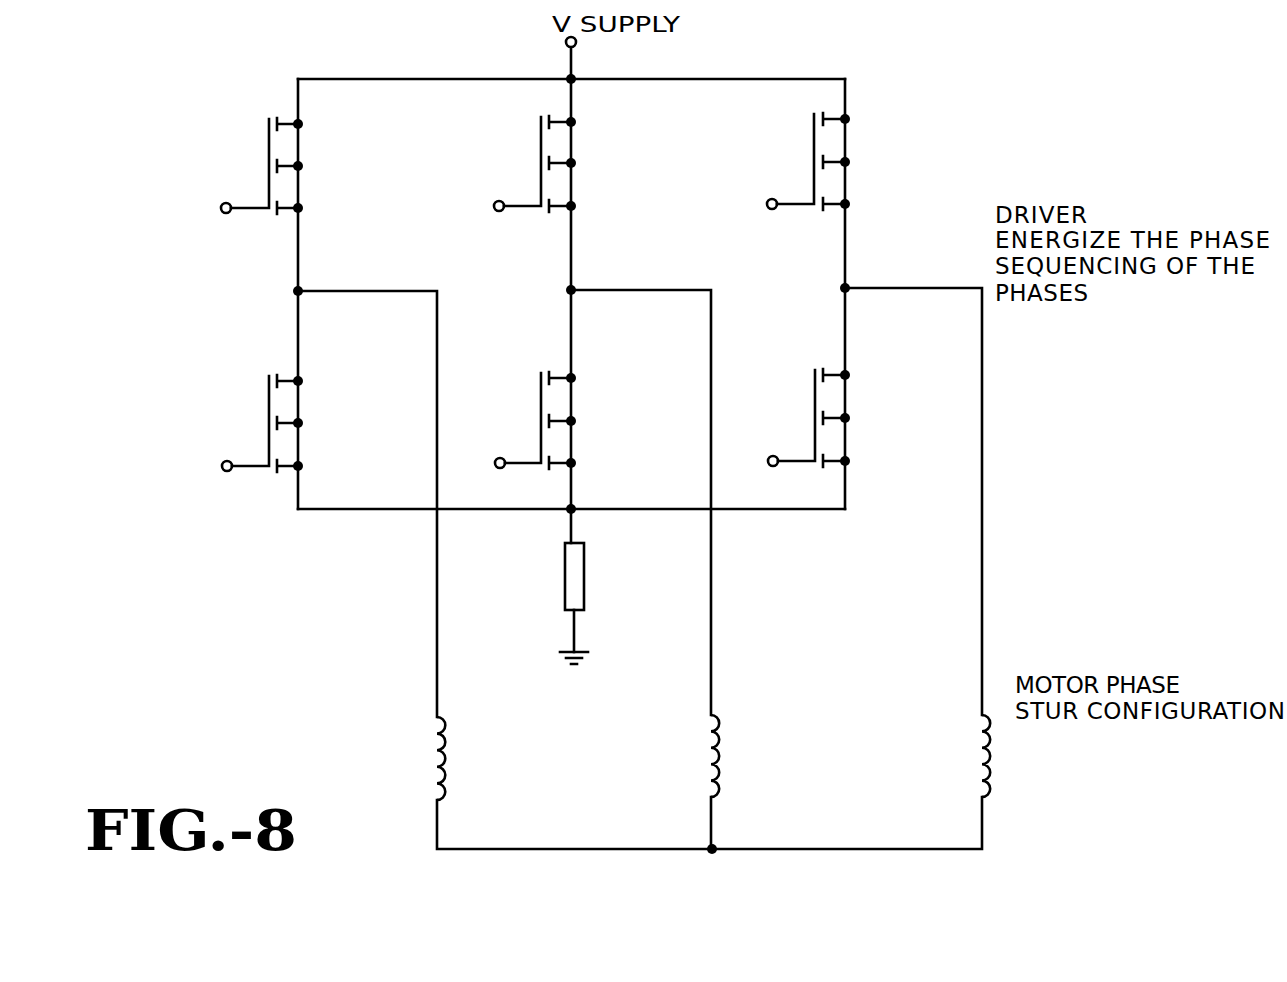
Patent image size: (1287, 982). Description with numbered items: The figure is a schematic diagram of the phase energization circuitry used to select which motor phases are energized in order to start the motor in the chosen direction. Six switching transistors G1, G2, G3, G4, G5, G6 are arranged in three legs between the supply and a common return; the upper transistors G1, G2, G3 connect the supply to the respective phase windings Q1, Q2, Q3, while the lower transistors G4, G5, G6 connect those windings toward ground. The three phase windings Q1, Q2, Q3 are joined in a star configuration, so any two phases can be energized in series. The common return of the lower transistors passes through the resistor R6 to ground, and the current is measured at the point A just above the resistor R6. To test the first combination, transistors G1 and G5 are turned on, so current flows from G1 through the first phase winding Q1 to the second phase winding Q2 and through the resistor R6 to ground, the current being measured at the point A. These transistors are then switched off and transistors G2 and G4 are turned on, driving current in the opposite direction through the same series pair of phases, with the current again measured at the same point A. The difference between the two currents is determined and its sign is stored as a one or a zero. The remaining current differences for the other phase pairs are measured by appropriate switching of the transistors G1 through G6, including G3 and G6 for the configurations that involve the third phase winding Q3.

The transistor G1 is at (249, 166).
The transistor G2 is at (526, 164).
The transistor G3 is at (799, 161).
The transistor G4 is at (251, 423).
The transistor G5 is at (526, 420).
The transistor G6 is at (802, 418).
The resistor R6 is at (594, 603).
The point A is at (558, 513).
The motor phase winding Q1 is at (505, 570).
The motor phase winding Q2 is at (672, 569).
The motor phase winding Q3 is at (877, 568).